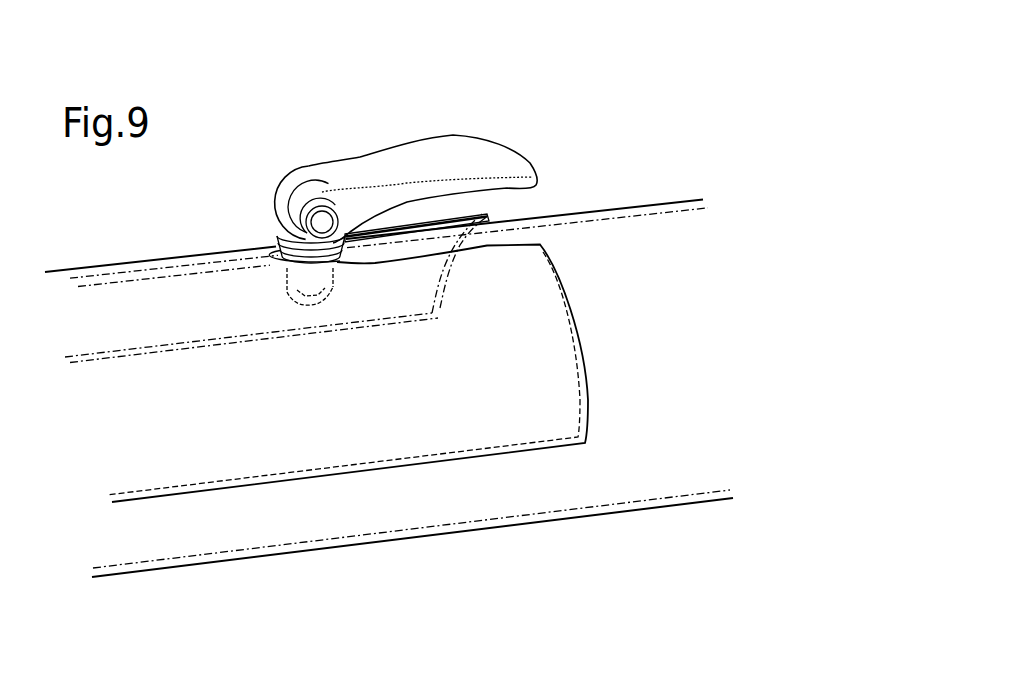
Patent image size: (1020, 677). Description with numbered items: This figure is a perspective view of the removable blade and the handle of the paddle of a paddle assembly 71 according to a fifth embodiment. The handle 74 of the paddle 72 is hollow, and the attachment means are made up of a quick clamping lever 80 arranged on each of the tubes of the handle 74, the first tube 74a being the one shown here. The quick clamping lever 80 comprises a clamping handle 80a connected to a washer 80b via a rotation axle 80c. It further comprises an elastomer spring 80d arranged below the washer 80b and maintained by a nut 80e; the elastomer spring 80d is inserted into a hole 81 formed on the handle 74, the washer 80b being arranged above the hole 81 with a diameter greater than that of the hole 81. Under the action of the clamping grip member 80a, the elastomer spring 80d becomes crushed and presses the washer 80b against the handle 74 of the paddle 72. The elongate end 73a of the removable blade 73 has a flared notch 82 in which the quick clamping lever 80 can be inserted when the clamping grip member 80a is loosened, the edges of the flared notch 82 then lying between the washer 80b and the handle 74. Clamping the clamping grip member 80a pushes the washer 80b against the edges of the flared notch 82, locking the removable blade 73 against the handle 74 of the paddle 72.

The paddle assembly 71 is at (716, 121).
The paddle 72 is at (680, 514).
The removable blade 73 is at (128, 268).
The elongate end 73a is at (550, 345).
The handle 74 is at (631, 200).
The first tube 74a is at (608, 477).
The quick clamping lever 80 is at (360, 151).
The clamping handle 80a is at (477, 155).
The washer 80b is at (282, 235).
The rotation axle 80c is at (322, 222).
The elastomer spring 80d is at (287, 277).
The nut 80e is at (307, 300).
The hole 81 is at (320, 268).
The flared notch 82 is at (483, 253).